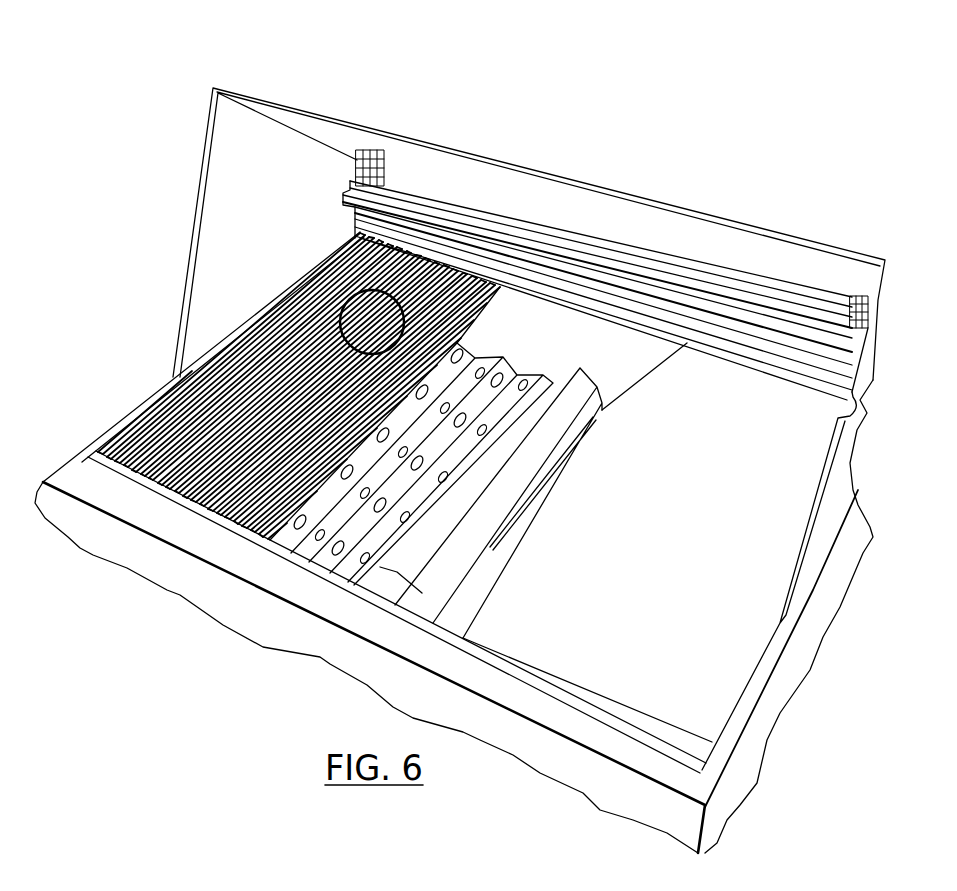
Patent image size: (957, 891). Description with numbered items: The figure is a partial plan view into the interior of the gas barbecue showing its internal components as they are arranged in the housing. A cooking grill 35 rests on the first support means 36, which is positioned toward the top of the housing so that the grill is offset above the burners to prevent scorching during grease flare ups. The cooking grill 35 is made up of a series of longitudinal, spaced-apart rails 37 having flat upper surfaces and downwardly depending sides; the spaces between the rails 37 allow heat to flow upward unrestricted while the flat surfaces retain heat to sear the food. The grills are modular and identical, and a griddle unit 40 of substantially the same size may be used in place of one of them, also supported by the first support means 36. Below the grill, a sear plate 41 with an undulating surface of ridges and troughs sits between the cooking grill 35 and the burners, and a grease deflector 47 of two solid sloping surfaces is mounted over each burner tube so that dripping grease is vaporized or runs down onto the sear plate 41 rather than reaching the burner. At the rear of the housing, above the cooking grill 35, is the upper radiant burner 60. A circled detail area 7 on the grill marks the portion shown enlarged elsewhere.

The detail circle of groove plate 7 is at (400, 310).
The cooking grill 35 is at (200, 398).
The first support means 36 is at (607, 326).
The rails 37 is at (123, 475).
The griddle unit 40 is at (727, 640).
The sear plate 41 is at (243, 576).
The grease deflector 47 is at (450, 542).
The upper radiant burner 60 is at (395, 180).